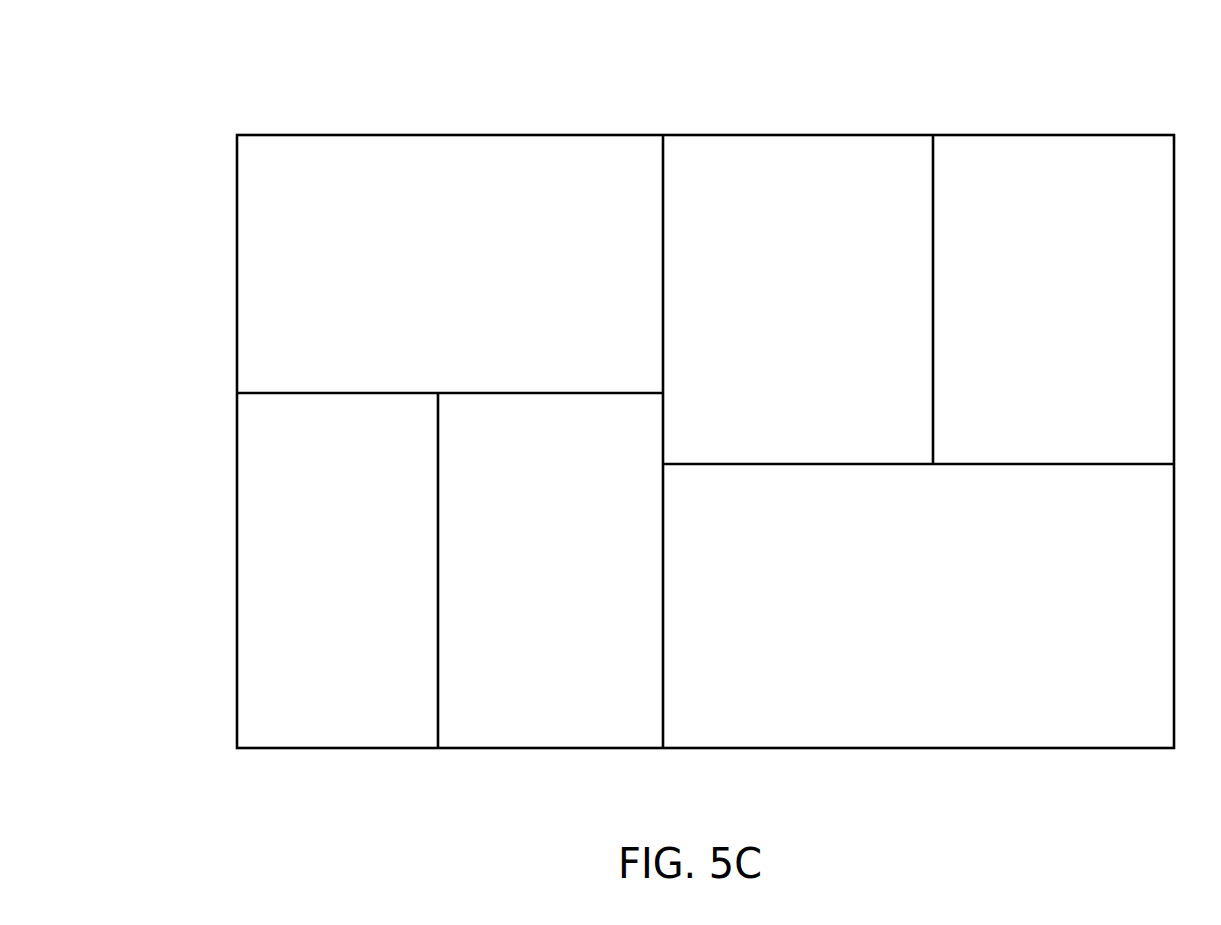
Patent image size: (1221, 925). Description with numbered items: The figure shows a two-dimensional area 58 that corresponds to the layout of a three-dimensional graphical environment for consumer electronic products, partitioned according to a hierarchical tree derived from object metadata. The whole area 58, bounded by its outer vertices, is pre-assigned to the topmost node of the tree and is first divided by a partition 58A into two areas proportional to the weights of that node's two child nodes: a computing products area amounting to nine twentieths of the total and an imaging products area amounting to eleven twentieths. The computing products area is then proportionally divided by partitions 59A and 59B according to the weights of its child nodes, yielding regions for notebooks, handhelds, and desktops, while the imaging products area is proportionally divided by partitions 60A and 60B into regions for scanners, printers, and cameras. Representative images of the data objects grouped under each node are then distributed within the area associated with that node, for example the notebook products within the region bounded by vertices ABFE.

The two-dimensional area 58 is at (248, 106).
The partition 58A is at (666, 180).
The partition 59A is at (353, 391).
The partition 59B is at (489, 627).
The partition 60A is at (751, 462).
The partition 60B is at (937, 406).